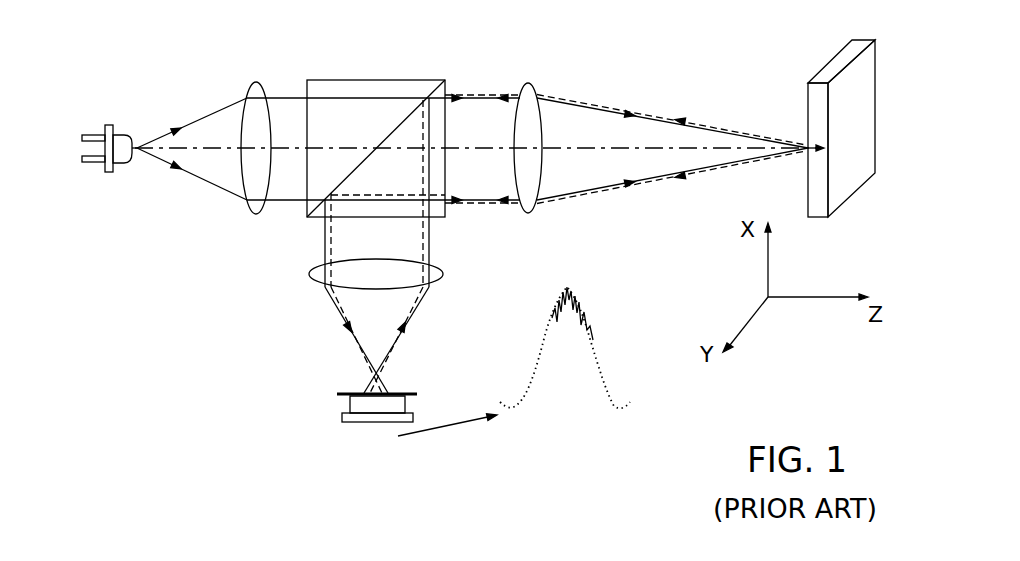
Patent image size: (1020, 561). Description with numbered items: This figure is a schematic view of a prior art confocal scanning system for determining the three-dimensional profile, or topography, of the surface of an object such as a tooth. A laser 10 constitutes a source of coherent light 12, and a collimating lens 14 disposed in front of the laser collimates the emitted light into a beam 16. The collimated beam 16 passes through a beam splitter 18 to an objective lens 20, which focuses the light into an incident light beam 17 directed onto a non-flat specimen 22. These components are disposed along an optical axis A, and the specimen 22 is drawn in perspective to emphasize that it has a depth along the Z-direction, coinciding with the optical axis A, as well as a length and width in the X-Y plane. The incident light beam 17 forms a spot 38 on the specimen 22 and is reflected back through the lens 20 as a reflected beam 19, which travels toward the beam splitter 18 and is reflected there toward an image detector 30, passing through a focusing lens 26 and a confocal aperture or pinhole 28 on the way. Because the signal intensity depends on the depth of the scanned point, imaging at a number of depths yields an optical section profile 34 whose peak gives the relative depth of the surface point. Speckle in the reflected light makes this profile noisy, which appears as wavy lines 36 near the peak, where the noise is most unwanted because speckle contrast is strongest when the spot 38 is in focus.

The optical axis A is at (207, 146).
The laser 10 is at (108, 172).
The coherent light 12 is at (127, 137).
The collimating lens 14 is at (257, 214).
The collimated beam 16 is at (286, 97).
The incident light beam 17 is at (592, 102).
The beam splitter 18 is at (378, 80).
The reflected beam 19 is at (700, 120).
The objective lens 20 is at (535, 82).
The specimen 22 is at (808, 186).
The focusing lens 26 is at (443, 278).
The confocal aperture or pinhole 28 is at (356, 381).
The image detector 30 is at (350, 407).
The optical section profile 34 is at (607, 387).
The wavy lines 36 is at (588, 290).
The spot 38 is at (800, 128).